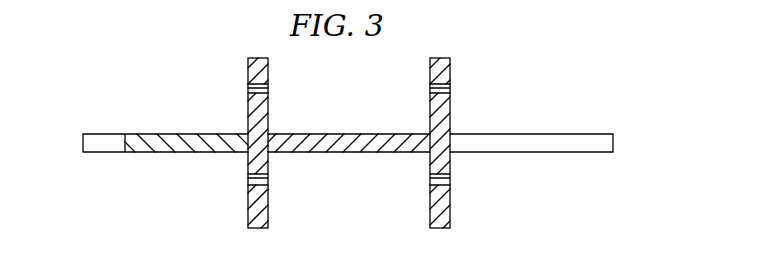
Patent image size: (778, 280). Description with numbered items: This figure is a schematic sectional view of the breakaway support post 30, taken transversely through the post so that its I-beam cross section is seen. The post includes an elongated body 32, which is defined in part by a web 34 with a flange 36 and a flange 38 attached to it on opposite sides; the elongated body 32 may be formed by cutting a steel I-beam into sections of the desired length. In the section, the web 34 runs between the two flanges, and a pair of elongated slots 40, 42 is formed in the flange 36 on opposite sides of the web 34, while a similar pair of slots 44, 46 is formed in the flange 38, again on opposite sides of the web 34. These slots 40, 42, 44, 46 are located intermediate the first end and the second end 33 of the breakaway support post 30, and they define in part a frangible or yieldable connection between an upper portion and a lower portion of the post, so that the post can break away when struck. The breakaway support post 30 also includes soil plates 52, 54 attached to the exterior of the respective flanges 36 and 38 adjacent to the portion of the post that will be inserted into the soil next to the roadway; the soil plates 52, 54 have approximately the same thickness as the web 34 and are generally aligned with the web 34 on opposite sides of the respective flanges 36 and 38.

The breakaway support post 30 is at (456, 44).
The elongated body 32 is at (243, 44).
The second end 33 is at (352, 114).
The web 34 is at (352, 134).
The flange 36 is at (248, 122).
The flange 38 is at (450, 73).
The elongated slot 40 is at (263, 110).
The elongated slot 42 is at (263, 199).
The slot 44 is at (450, 101).
The slot 46 is at (450, 195).
The soil plate 52 is at (84, 141).
The soil plate 54 is at (616, 136).